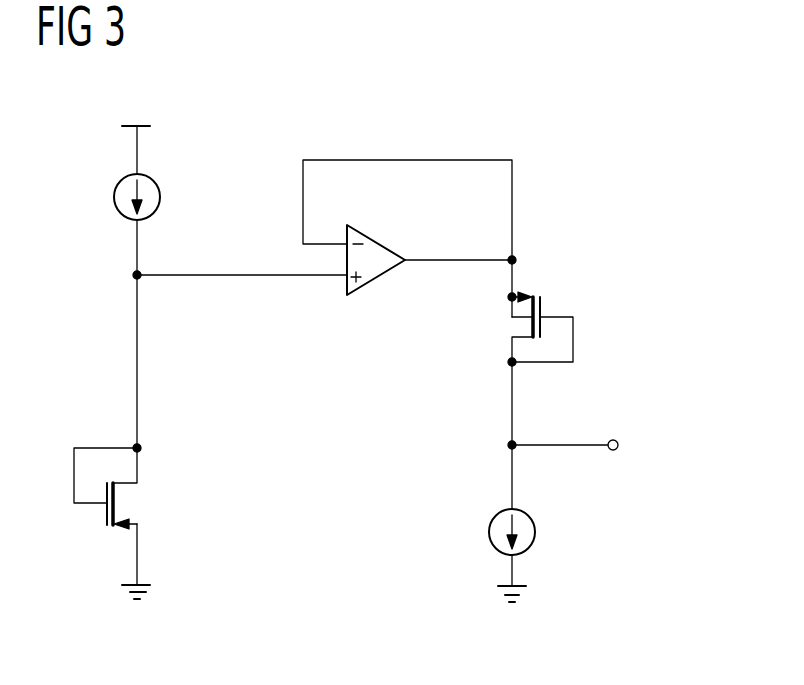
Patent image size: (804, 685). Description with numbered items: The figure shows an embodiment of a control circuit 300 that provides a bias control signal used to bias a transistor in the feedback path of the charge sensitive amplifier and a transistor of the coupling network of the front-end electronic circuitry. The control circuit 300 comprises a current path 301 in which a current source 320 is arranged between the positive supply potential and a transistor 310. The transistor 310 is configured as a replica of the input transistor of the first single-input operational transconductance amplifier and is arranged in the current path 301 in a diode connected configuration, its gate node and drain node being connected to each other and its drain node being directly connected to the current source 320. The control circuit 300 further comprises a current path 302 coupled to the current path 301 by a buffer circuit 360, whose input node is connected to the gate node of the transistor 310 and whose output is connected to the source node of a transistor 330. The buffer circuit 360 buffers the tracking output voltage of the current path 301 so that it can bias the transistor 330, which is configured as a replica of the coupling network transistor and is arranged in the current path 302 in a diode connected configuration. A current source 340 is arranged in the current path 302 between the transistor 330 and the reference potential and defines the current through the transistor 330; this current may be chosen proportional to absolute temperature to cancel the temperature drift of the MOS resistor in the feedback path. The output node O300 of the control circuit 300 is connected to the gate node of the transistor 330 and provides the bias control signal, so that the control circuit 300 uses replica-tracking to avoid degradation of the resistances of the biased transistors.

The control circuit 300 is at (610, 122).
The current path 301 is at (135, 360).
The current path 302 is at (510, 400).
The transistor 310 is at (115, 497).
The current source 320 is at (112, 200).
The transistor 330 is at (546, 303).
The current source 340 is at (536, 532).
The buffer circuit 360 is at (376, 242).
The output node O300 is at (616, 438).